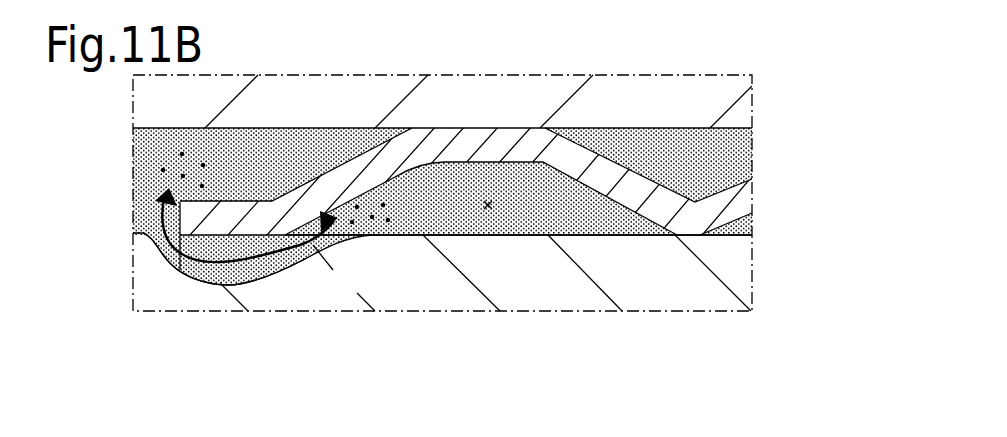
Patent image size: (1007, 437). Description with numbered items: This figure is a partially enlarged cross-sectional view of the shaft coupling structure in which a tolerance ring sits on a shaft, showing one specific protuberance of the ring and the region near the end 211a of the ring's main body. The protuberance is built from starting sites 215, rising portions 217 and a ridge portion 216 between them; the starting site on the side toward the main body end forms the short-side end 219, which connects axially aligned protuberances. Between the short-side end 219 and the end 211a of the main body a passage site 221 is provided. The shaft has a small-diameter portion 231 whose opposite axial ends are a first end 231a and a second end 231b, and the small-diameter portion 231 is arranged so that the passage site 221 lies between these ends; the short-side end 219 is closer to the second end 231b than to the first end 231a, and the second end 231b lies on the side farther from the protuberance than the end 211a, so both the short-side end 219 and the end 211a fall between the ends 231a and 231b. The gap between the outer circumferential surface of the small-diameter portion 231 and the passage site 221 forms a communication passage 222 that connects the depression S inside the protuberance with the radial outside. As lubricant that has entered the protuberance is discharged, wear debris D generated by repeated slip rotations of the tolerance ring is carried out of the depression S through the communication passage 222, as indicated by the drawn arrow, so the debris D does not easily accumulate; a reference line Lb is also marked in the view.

The ridge portion 216 is at (487, 107).
The rising portions 217 is at (333, 170).
The passage site 221 is at (233, 210).
The end of the main body 211a is at (150, 212).
The short-side end 219 is at (442, 293).
The starting sites 215 is at (296, 260).
The second end of the small-diameter portion 231b is at (143, 228).
The communication passage 222 is at (218, 280).
The small-diameter portion 231 is at (270, 274).
The first end of the small-diameter portion 231a is at (373, 219).
The wear debris D is at (182, 155).
The depression S is at (488, 210).
The boundary line Lb is at (531, 222).